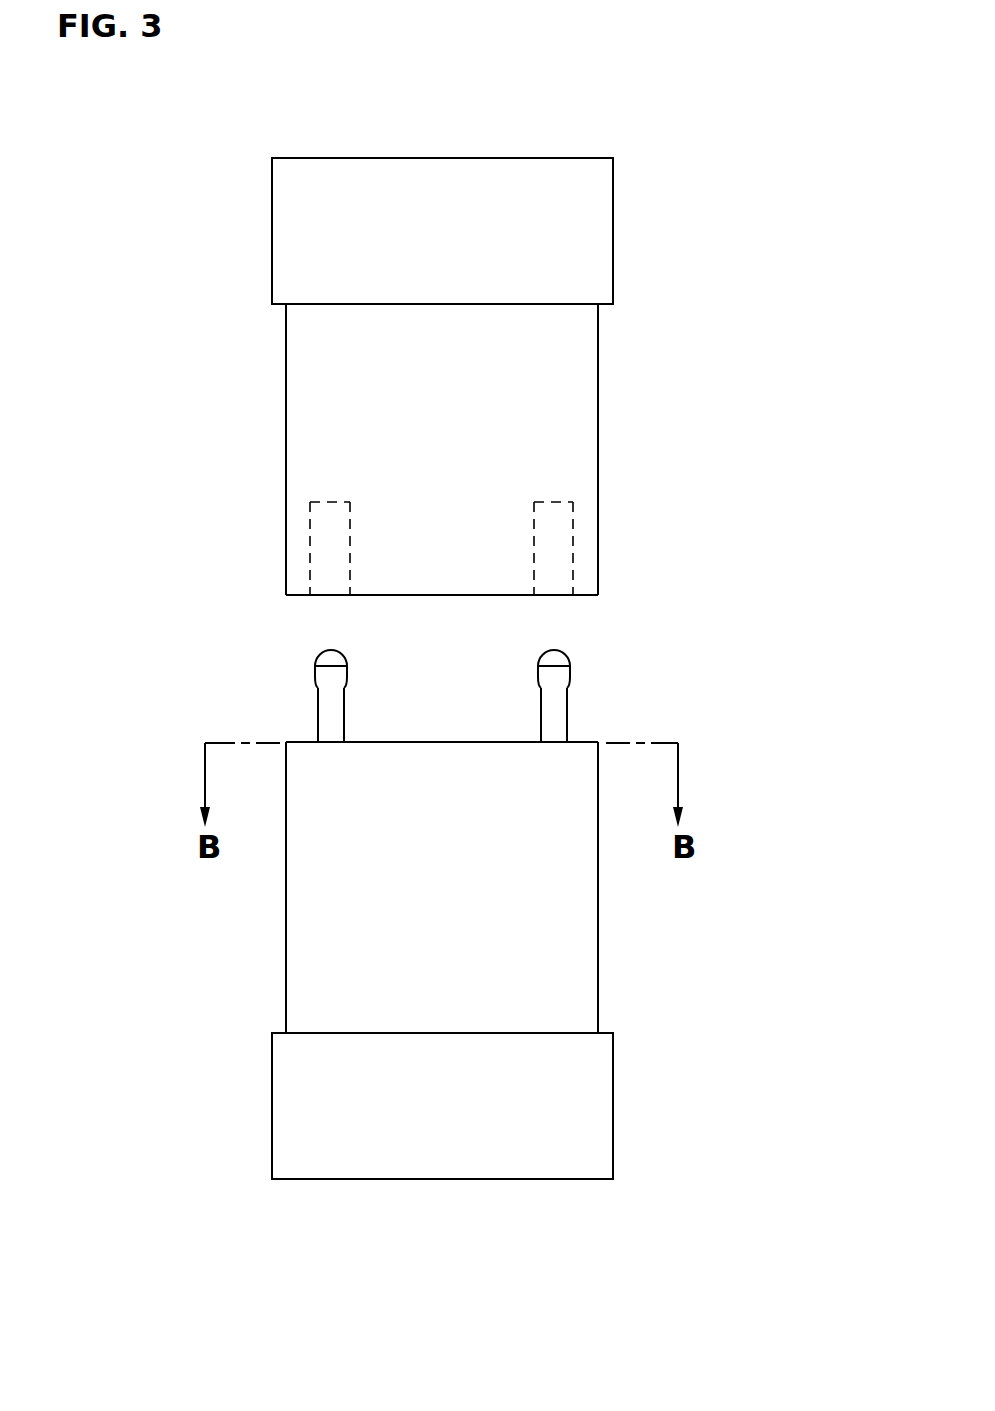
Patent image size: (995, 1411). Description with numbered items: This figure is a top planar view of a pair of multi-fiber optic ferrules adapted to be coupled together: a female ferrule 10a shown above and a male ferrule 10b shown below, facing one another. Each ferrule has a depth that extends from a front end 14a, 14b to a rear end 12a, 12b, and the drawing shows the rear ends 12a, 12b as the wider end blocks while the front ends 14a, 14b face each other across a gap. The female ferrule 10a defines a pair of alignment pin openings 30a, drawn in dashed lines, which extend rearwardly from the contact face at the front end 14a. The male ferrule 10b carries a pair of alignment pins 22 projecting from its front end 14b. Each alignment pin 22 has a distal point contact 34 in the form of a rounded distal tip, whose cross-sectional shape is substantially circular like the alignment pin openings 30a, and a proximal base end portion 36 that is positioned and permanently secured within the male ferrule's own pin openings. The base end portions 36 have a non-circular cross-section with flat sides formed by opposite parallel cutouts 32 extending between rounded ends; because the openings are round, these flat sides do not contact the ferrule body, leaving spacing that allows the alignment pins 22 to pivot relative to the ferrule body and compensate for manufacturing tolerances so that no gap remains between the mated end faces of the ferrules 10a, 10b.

The female ferrule 10a is at (496, 437).
The male ferrule 10b is at (530, 866).
The rear end of female ferrule 12a is at (500, 126).
The rear end of male ferrule 12b is at (451, 1215).
The front end of female ferrule 14a is at (281, 611).
The front end of male ferrule 14b is at (611, 731).
The alignment pins 22 is at (437, 672).
The alignment pin openings 30a is at (325, 518).
The opposite parallel cutouts 32 is at (297, 691).
The distal point contacts 34 is at (333, 658).
The proximal base end portions 36 is at (330, 707).